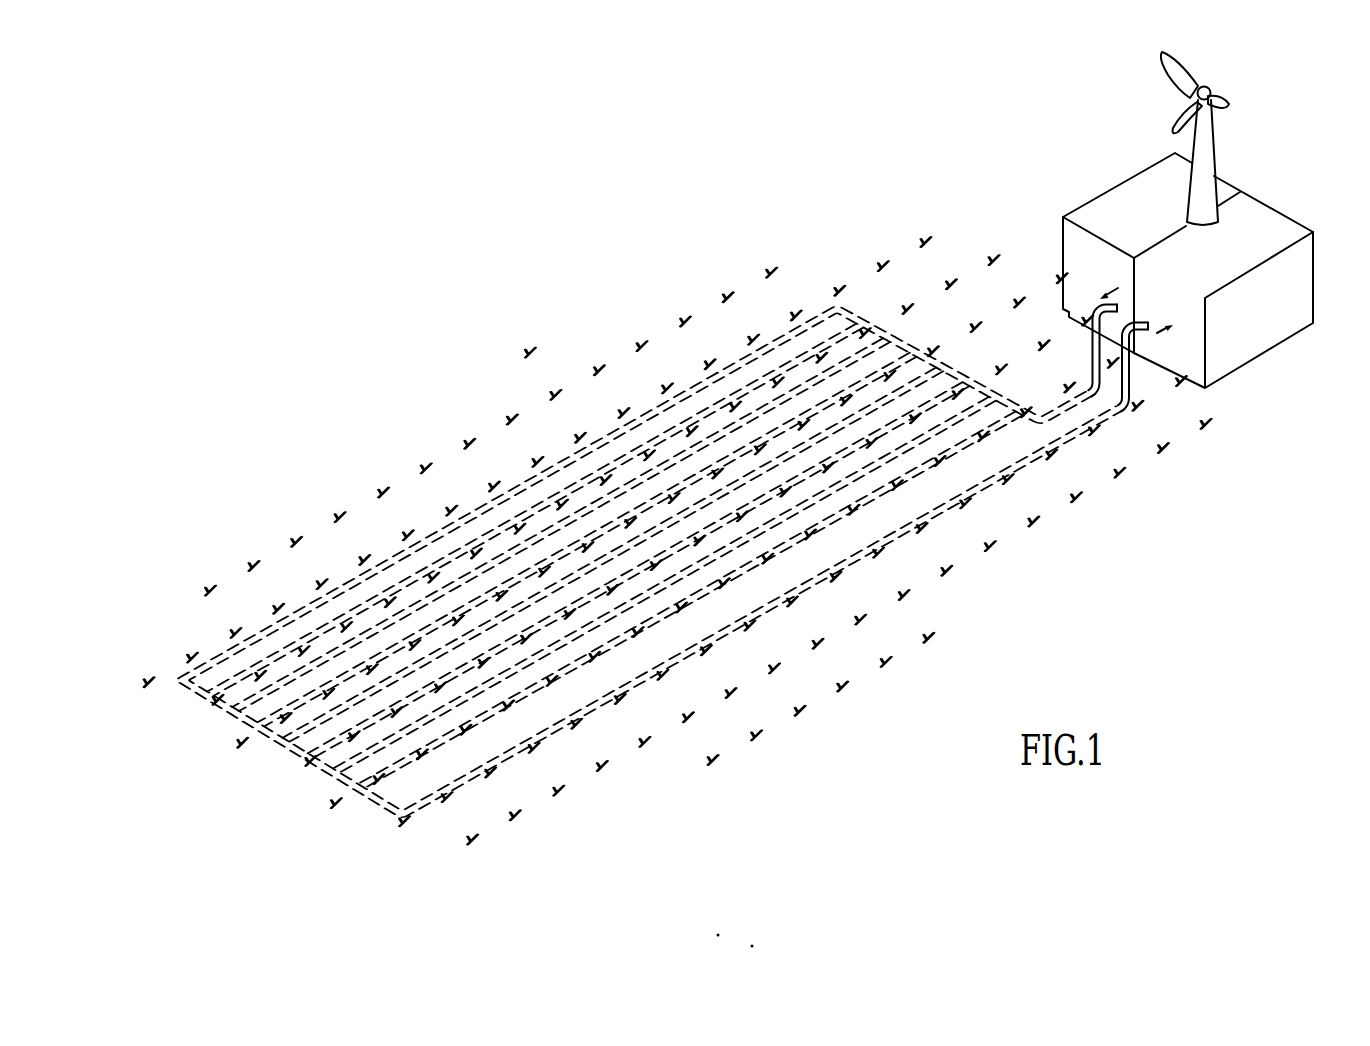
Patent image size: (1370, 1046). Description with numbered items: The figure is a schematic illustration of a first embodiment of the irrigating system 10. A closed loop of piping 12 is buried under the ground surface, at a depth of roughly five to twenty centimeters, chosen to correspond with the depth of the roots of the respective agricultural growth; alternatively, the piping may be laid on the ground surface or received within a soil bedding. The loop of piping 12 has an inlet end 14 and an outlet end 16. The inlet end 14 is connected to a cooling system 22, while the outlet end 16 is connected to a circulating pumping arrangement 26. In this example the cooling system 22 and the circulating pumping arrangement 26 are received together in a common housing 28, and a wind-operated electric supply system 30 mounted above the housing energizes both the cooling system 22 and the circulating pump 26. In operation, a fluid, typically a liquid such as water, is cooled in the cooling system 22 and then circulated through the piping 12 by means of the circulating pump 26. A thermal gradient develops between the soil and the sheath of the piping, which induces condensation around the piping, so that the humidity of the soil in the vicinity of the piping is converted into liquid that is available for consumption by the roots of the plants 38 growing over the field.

The irrigating system 10 is at (752, 210).
The closed loop of piping 12 is at (643, 407).
The inlet end 14 is at (1140, 345).
The outlet end 16 is at (1093, 343).
The cooling system 22 is at (1268, 227).
The circulating pumping arrangement 26 is at (1133, 197).
The common housing 28 is at (1237, 183).
The wind-operated electric supply system 30 is at (1210, 93).
The plants 38 is at (813, 653).